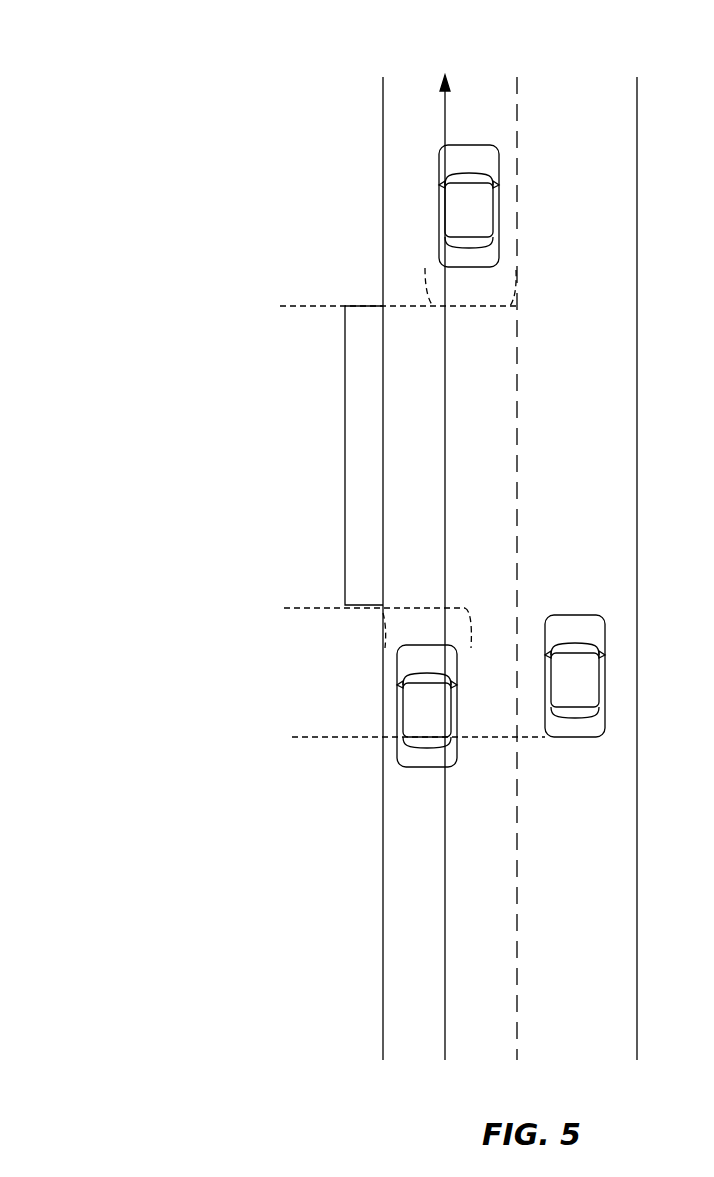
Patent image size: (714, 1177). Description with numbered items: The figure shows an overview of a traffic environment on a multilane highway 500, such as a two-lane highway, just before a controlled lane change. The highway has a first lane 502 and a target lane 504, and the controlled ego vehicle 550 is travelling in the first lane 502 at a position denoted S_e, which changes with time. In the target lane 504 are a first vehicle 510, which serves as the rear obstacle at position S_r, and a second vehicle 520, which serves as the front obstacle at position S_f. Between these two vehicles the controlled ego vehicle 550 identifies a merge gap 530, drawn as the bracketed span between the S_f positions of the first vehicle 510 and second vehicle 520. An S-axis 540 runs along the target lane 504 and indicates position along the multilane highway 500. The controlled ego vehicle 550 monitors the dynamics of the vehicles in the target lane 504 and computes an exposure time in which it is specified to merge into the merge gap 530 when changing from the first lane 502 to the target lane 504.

The multilane highway 500 is at (125, 180).
The first lane 502 is at (590, 1052).
The target lane 504 is at (487, 1052).
The first vehicle 510 is at (442, 720).
The second vehicle 520 is at (484, 220).
The merge gap 530 is at (345, 457).
The S-axis 540 is at (448, 47).
The controlled ego vehicle 550 is at (590, 690).